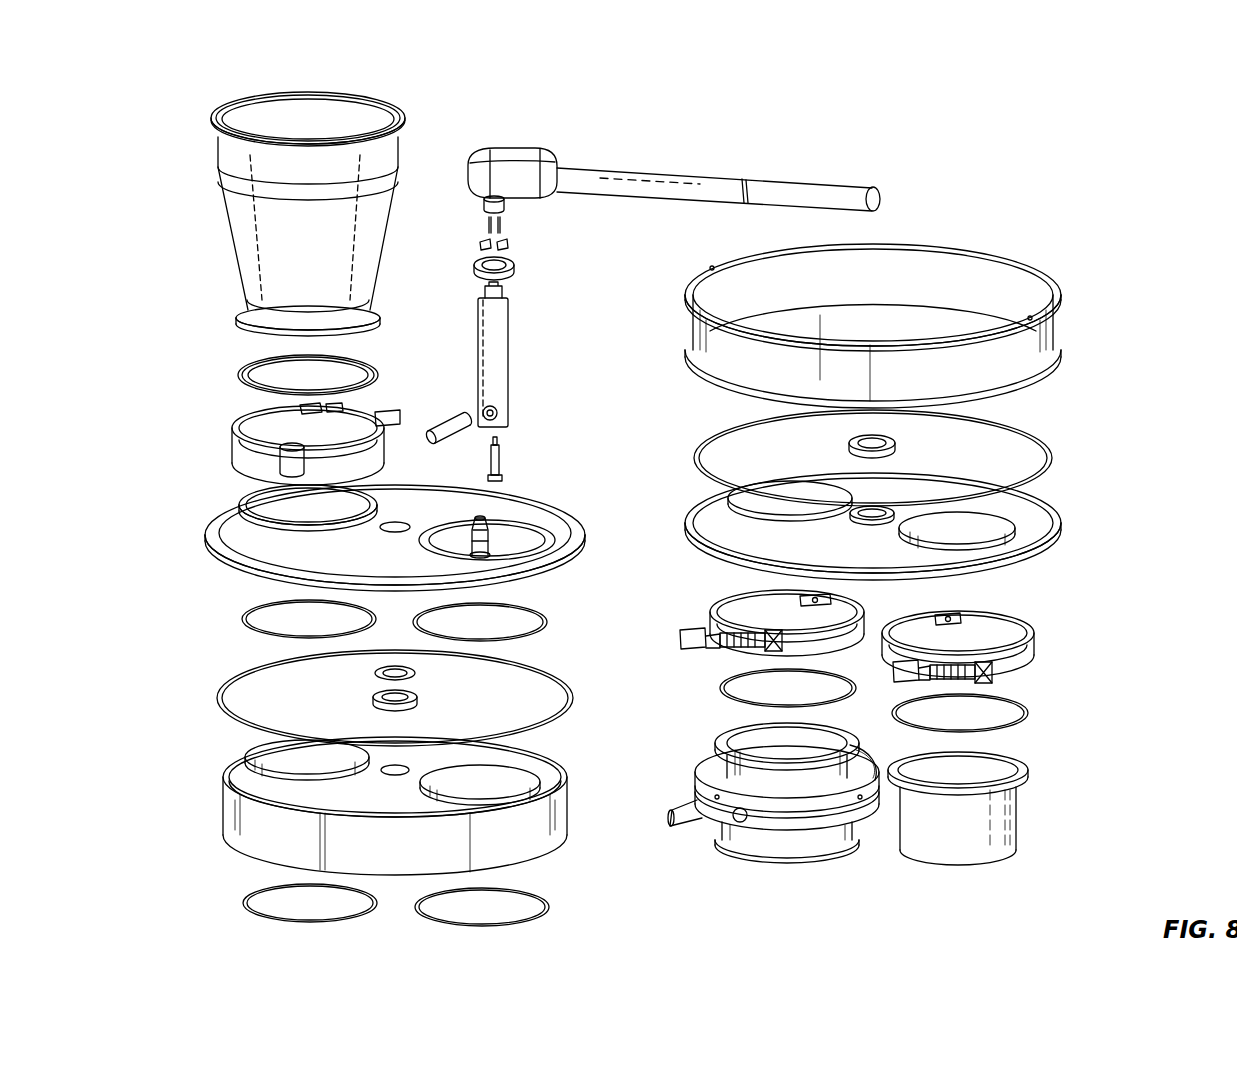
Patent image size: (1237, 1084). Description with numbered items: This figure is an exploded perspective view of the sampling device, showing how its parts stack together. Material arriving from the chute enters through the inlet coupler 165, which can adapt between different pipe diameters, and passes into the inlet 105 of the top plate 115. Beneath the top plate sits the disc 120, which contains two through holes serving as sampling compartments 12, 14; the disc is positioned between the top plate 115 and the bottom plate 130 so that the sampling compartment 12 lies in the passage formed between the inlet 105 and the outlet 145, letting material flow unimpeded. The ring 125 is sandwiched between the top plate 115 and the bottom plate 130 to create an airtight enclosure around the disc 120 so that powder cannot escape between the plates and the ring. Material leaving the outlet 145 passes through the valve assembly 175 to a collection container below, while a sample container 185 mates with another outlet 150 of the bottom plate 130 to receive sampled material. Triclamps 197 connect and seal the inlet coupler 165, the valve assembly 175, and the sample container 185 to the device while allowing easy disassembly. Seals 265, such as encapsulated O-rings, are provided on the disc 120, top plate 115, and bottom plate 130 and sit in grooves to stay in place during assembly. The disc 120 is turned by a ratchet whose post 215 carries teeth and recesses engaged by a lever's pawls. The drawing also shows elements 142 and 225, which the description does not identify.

The sampling compartment 12 is at (290, 753).
The sampling compartment 14 is at (485, 772).
The inlet 105 is at (412, 534).
The top plate 115 is at (512, 503).
The disc 120 is at (358, 783).
The ring 125 is at (1047, 332).
The bottom plate 130 is at (912, 530).
The nozzle 142 is at (515, 543).
The outlet 145 is at (737, 502).
The outlet 150 is at (990, 530).
The inlet coupler 165 is at (232, 233).
The valve assembly 175 is at (698, 795).
The sample container 185 is at (1022, 813).
The triclamps 197 is at (232, 437).
The post 215 is at (512, 362).
The pin 225 is at (443, 423).
The seals 265 is at (250, 607).